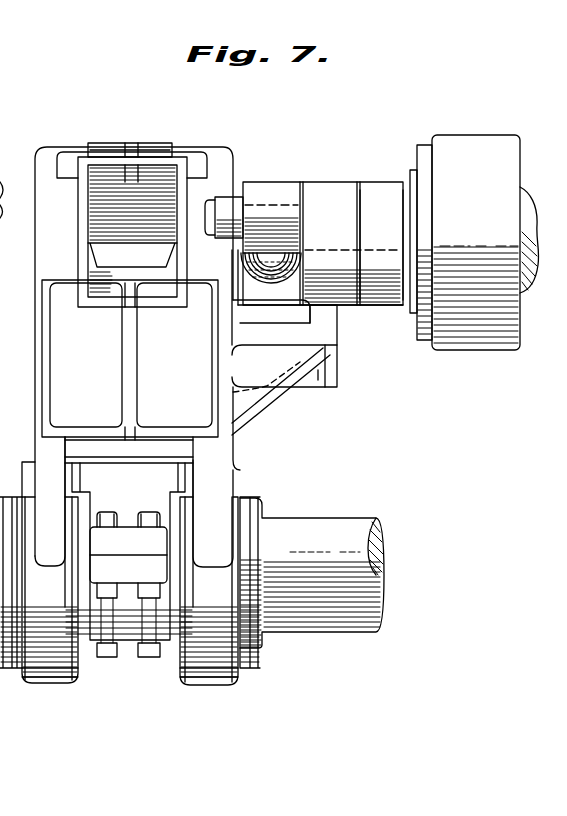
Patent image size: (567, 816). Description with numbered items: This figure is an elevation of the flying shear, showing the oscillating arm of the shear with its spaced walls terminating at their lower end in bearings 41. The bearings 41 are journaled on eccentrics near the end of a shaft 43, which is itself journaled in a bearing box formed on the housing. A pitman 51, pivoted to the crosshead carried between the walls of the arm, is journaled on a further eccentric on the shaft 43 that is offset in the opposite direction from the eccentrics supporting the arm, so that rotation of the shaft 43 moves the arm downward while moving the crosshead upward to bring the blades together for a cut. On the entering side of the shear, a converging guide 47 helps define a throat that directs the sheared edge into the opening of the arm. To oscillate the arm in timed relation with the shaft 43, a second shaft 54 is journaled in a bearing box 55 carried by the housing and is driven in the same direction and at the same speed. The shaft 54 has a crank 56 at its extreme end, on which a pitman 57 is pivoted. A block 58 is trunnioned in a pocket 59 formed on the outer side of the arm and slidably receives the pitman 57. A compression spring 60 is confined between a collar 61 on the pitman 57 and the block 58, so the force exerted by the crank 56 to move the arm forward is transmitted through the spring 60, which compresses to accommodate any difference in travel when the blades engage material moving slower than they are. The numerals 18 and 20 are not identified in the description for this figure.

The frame 18 is at (8, 229).
The housing 20 is at (35, 358).
The bearings 41 is at (50, 662).
The shaft 43 is at (327, 528).
The converging guide 47 is at (78, 220).
The pitman 51 is at (148, 475).
The shaft 54 is at (527, 207).
The bearing box 55 is at (478, 337).
The crank 56 is at (317, 195).
The pitman 57 is at (300, 263).
The block 58 is at (290, 317).
The pocket 59 is at (325, 330).
The compression spring 60 is at (278, 300).
The collar 61 is at (238, 263).